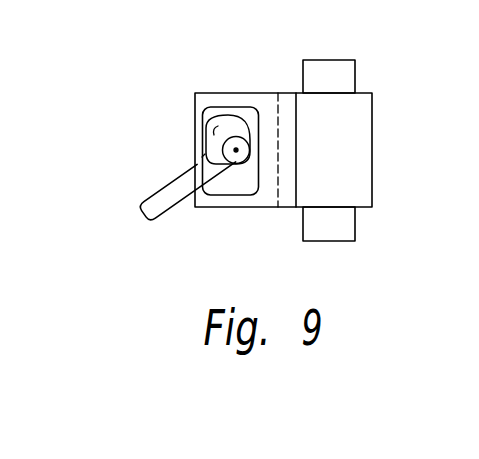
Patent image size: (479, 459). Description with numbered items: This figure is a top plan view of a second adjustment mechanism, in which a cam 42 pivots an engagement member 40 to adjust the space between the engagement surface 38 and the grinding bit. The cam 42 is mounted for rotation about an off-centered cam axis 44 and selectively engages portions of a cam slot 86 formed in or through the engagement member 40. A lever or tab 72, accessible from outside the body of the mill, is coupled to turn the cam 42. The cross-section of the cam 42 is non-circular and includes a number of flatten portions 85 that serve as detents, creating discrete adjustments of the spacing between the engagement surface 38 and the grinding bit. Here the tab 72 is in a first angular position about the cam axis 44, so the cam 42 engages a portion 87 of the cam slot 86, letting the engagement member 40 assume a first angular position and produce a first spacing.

The engagement surface 38 is at (314, 158).
The engagement member 40 is at (267, 208).
The cam 42 is at (214, 135).
The cam axis 44 is at (236, 150).
The tab 72 is at (180, 208).
The flatten portions 85 is at (202, 157).
The cam slot 86 is at (246, 107).
The portion of the cam slot 87 is at (217, 110).